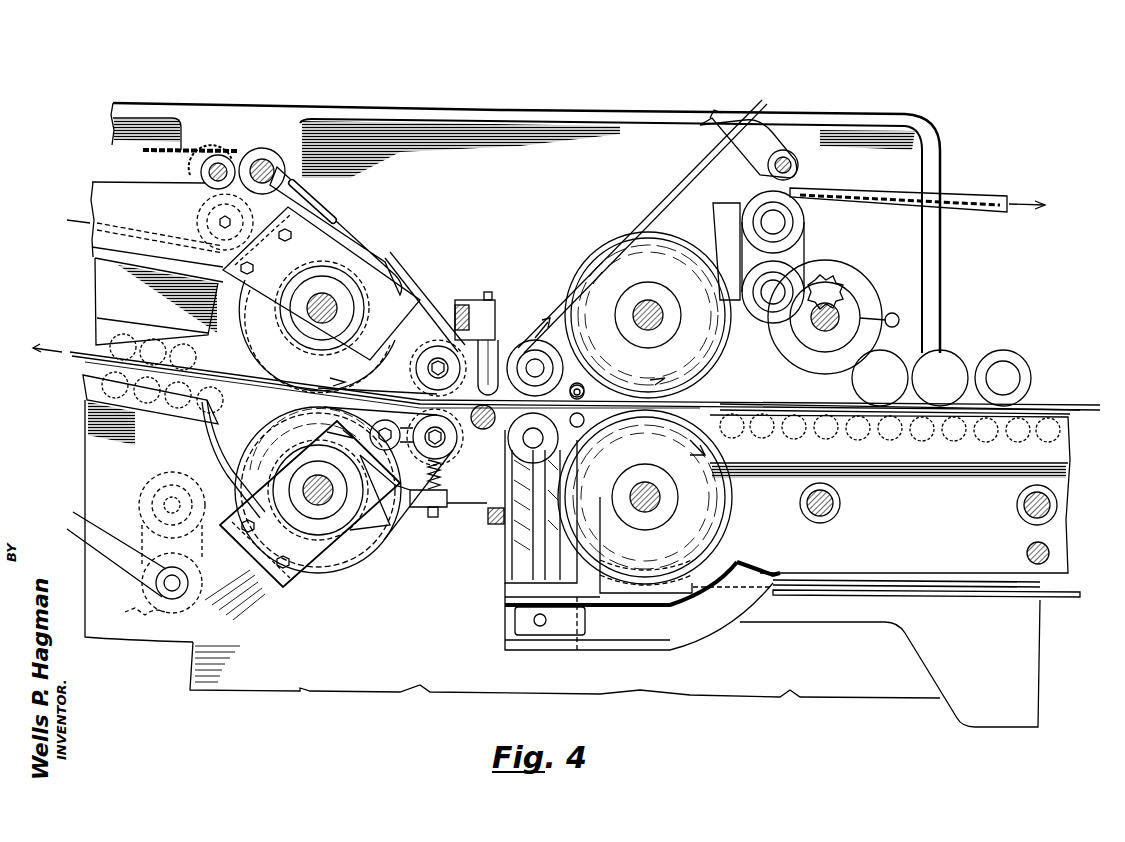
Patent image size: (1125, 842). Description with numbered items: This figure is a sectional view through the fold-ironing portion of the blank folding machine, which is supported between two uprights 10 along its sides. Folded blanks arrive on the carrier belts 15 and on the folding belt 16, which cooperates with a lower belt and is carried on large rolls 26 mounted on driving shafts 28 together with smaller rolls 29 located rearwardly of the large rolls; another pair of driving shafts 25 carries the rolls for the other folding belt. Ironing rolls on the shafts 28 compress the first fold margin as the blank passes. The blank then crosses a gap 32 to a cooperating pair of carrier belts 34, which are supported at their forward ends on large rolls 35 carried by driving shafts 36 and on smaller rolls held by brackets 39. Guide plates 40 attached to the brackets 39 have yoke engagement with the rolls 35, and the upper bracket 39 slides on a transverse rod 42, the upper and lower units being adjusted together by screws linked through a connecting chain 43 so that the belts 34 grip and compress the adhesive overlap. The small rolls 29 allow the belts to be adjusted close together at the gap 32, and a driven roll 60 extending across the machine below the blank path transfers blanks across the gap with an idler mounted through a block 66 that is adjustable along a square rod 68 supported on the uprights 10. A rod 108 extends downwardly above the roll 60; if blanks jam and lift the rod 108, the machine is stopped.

The uprights 10 is at (590, 112).
The carrier belts 15 is at (1068, 425).
The folding belt 16 is at (962, 190).
The driving shafts 25 is at (815, 325).
The large rolls 26 is at (625, 262).
The driving shafts 28 is at (662, 316).
The smaller rolls 29 is at (538, 352).
The gap 32 is at (488, 285).
The carrier belts 34 is at (418, 298).
The large rolls 35 is at (268, 350).
The driving shafts 36 is at (318, 322).
The brackets 39 is at (103, 202).
The guide plates 40 is at (340, 283).
The transverse rod 42 is at (265, 165).
The connecting chain 43 is at (200, 143).
The driven roll 60 is at (483, 430).
The block 66 is at (497, 320).
The square rod 68 is at (462, 318).
The rod 108 is at (703, 178).